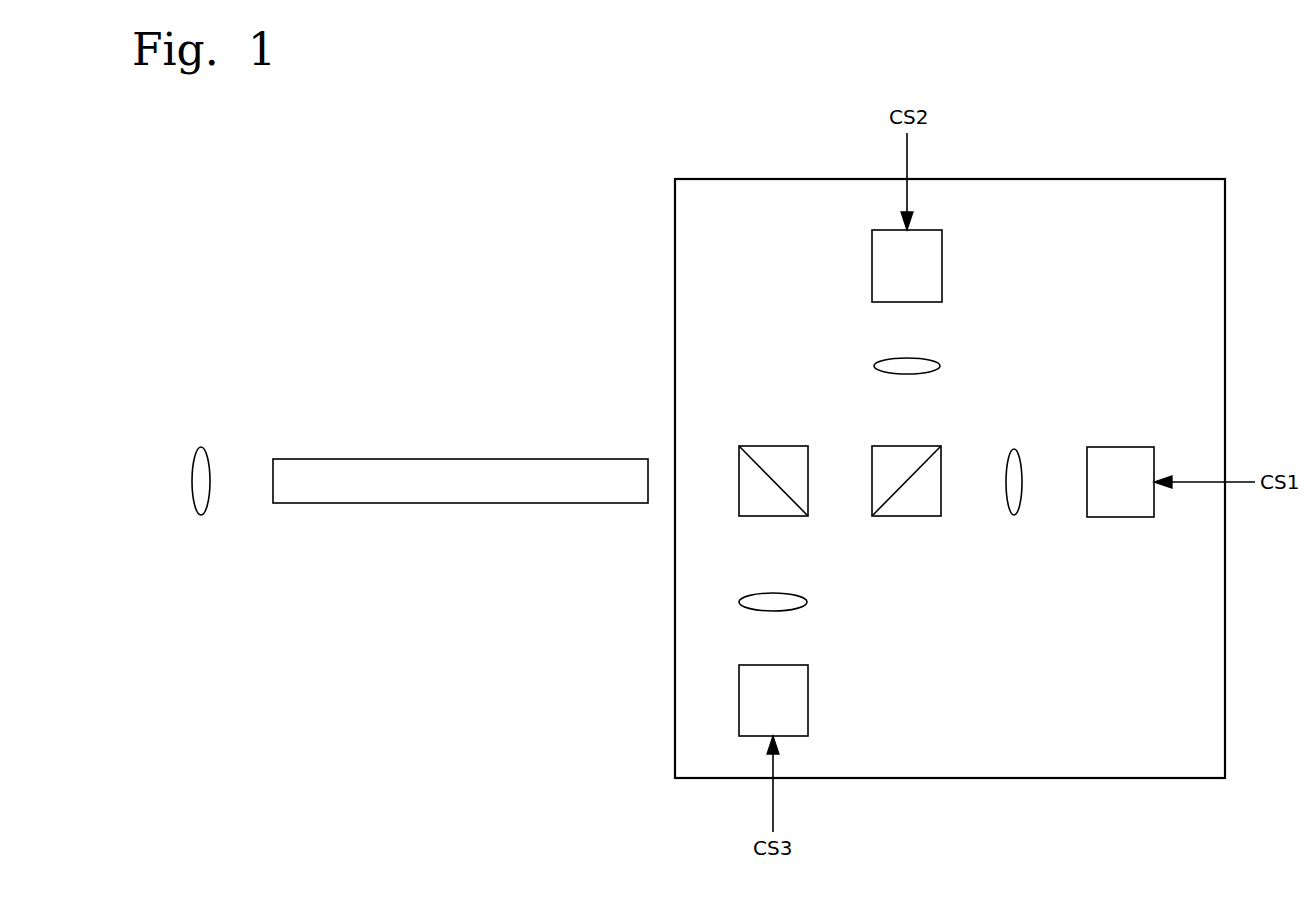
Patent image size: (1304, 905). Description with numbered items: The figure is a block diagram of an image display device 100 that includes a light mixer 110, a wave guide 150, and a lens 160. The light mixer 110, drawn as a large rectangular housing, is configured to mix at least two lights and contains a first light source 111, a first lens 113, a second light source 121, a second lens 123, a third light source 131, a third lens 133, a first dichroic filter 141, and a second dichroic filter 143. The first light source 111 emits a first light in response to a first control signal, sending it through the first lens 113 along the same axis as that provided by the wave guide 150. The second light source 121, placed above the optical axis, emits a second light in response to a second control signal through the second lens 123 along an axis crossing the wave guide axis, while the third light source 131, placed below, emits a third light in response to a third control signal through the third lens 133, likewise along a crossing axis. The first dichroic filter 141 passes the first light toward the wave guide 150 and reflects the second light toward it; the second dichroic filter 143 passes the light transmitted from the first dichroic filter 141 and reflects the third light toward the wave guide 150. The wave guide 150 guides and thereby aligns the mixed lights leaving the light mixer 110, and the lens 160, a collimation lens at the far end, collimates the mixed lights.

The image display device 100 is at (1279, 109).
The light mixer 110 is at (1067, 179).
The first light source 111 is at (1137, 447).
The first lens 113 is at (1014, 449).
The second light source 121 is at (942, 264).
The second lens 123 is at (940, 366).
The third light source 131 is at (808, 700).
The third lens 133 is at (807, 602).
The first dichroic filter 141 is at (923, 446).
The second dichroic filter 143 is at (790, 446).
The wave guide 150 is at (583, 459).
The lens 160 is at (201, 447).